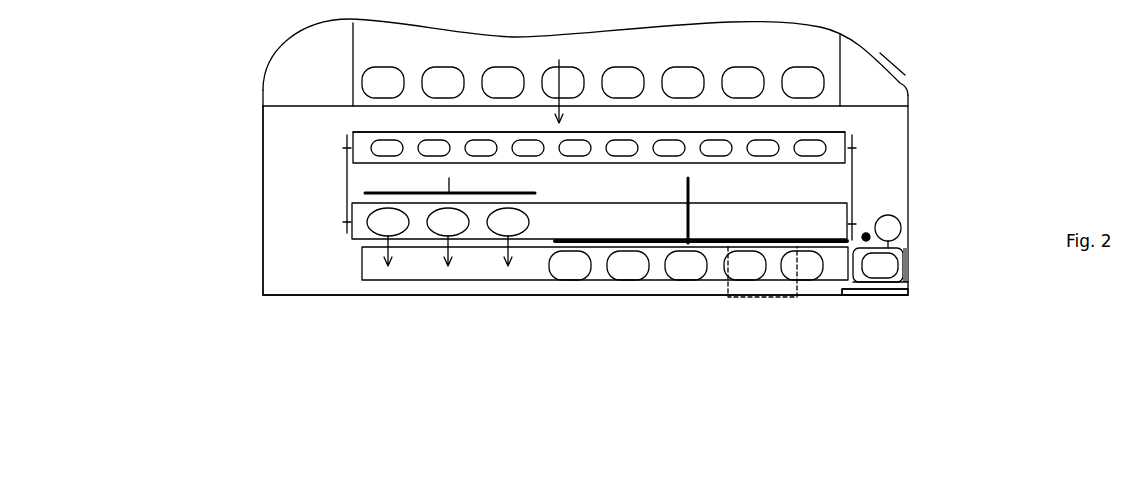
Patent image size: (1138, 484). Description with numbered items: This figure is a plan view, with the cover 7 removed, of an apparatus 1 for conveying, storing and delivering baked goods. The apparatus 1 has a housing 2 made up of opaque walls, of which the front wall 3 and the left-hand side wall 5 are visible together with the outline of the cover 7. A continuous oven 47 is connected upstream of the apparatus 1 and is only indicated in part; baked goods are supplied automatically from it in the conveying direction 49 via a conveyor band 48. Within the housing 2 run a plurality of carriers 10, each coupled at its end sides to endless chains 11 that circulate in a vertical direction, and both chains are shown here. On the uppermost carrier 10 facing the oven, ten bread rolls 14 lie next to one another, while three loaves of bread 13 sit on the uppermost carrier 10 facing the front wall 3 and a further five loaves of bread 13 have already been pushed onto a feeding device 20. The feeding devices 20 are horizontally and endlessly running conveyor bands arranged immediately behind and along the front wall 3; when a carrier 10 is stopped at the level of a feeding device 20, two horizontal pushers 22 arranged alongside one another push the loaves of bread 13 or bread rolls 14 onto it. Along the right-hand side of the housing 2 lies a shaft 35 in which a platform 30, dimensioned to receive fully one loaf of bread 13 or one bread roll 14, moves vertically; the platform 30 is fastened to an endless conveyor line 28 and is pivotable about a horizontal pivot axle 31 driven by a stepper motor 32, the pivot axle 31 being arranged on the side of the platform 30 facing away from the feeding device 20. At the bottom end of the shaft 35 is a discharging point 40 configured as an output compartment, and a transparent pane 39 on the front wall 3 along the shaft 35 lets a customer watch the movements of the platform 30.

The apparatus 1 is at (932, 118).
The housing 2 is at (913, 146).
The front wall 3 is at (378, 295).
The left-hand side wall 5 is at (263, 180).
The cover 7 is at (869, 106).
The carriers 10 is at (603, 143).
The endless chains 11 is at (347, 200).
The loaves of bread 13 is at (745, 84).
The bread rolls 14 is at (383, 146).
The feeding device 20 is at (362, 265).
The horizontal pushers 22 is at (485, 193).
The endless conveyor line 28 is at (910, 262).
The platform 30 is at (862, 290).
The pivot axle 31 is at (905, 288).
The stepper motor 32 is at (888, 215).
The shaft 35 is at (866, 233).
The transparent pane 39 is at (858, 296).
The discharging point 40 is at (735, 292).
The continuous oven 47 is at (893, 58).
The conveyor band 48 is at (367, 50).
The conveying direction 49 is at (566, 91).